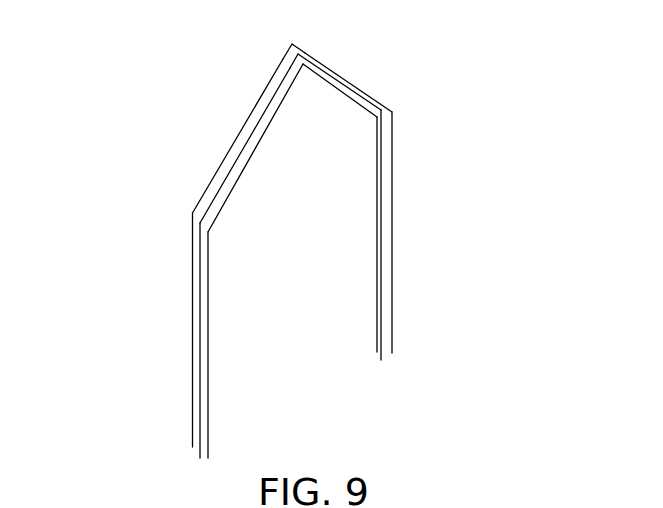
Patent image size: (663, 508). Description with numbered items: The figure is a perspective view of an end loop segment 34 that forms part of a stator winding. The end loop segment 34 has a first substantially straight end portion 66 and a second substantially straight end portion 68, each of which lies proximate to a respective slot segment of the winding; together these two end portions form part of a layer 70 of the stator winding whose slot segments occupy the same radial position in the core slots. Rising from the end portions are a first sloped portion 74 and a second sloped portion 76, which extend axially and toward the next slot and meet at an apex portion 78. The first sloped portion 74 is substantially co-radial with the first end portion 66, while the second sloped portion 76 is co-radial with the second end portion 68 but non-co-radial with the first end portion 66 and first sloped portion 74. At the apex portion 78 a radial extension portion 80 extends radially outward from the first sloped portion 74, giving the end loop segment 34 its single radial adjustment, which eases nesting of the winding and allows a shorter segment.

The end loop segment 34 is at (419, 83).
The first substantially straight end portion 66 is at (209, 303).
The second substantially straight end portion 68 is at (392, 208).
The layer 70 is at (147, 410).
The first sloped portion 74 is at (237, 155).
The second sloped portion 76 is at (348, 81).
The apex portion 78 is at (288, 66).
The radial extension portion 80 is at (290, 52).